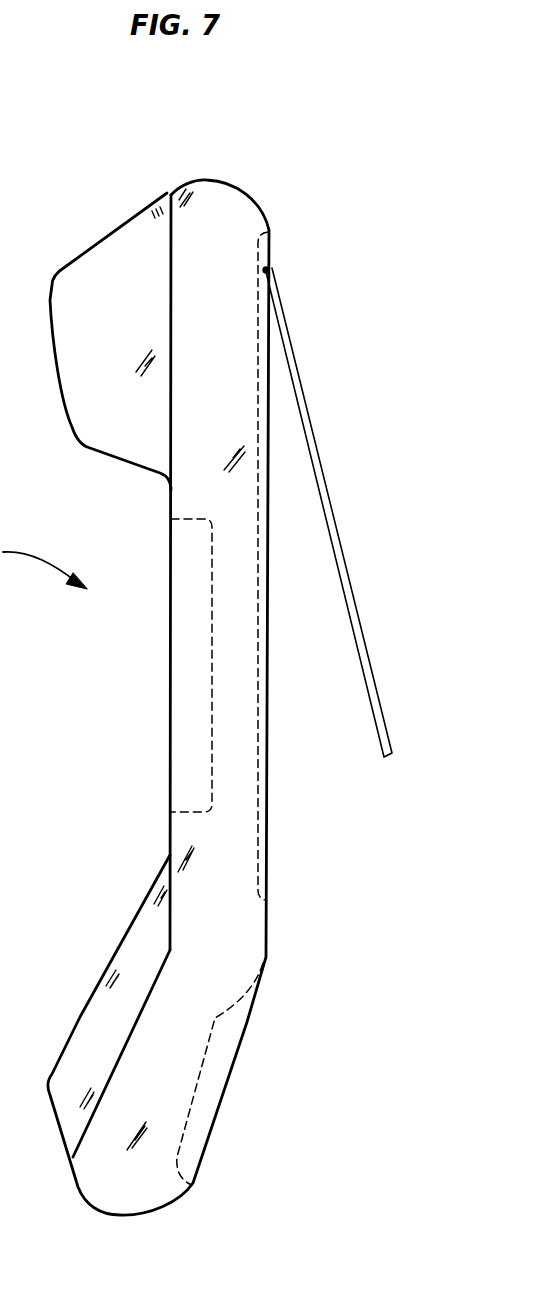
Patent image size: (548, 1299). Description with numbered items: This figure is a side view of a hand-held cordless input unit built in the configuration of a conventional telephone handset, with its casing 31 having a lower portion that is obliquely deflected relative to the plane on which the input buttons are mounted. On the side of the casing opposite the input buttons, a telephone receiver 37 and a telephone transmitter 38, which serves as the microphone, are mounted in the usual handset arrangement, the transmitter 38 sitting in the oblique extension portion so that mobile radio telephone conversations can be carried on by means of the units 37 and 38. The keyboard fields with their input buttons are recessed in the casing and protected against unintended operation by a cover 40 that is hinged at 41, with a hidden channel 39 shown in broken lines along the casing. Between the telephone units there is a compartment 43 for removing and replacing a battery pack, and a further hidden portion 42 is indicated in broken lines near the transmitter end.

The housing body 31 is at (212, 207).
The telephone receiver 37 is at (83, 377).
The transmitter (microphone) 38 is at (95, 1022).
The channel 39 is at (265, 710).
The cover 40 is at (313, 443).
The hinge 41 is at (272, 228).
The hidden portion 42 is at (220, 1050).
The compartment 43 is at (210, 642).